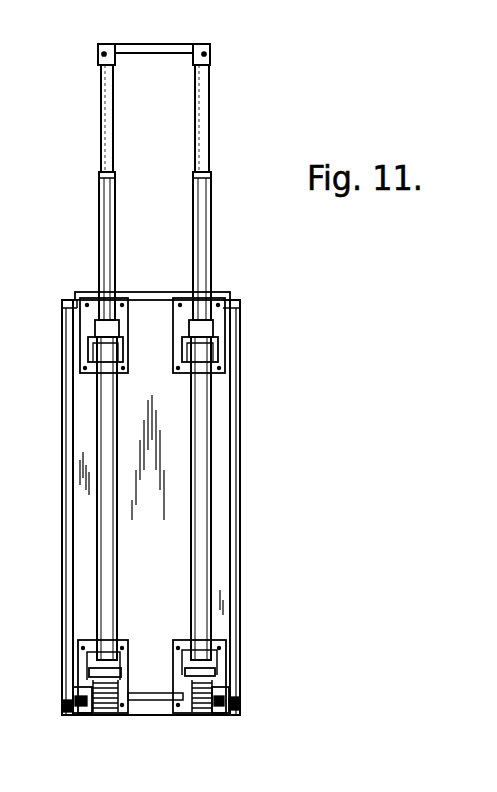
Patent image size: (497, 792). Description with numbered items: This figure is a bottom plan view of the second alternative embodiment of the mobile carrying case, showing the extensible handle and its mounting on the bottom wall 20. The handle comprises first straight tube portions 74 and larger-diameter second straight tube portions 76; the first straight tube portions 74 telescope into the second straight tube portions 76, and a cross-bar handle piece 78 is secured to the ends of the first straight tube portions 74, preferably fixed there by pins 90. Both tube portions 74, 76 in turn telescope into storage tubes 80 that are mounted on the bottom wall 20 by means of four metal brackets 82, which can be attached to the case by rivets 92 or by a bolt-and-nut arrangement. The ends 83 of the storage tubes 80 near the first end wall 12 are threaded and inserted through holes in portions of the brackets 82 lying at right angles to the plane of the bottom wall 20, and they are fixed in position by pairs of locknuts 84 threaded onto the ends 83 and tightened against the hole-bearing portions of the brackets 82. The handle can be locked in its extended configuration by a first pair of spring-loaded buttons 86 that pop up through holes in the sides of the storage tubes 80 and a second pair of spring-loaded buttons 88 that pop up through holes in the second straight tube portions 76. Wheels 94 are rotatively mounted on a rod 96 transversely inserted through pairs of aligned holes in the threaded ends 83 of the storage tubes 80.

The first end wall 12 is at (116, 721).
The bottom wall 20 is at (64, 523).
The first straight tube portions 74 is at (210, 110).
The second straight tube portions 76 is at (116, 253).
The cross-bar handle piece 78 is at (151, 44).
The storage tubes 80 is at (105, 432).
The metal brackets 82 is at (177, 330).
The threaded ends of storage tubes 83 is at (62, 709).
The locknuts 84 is at (92, 675).
The first pair of spring-loaded buttons 86 is at (95, 328).
The second pair of spring-loaded buttons 88 is at (100, 184).
The pins 90 is at (104, 51).
The rivets 92 is at (82, 306).
The wheels 94 is at (85, 717).
The rod 96 is at (150, 655).